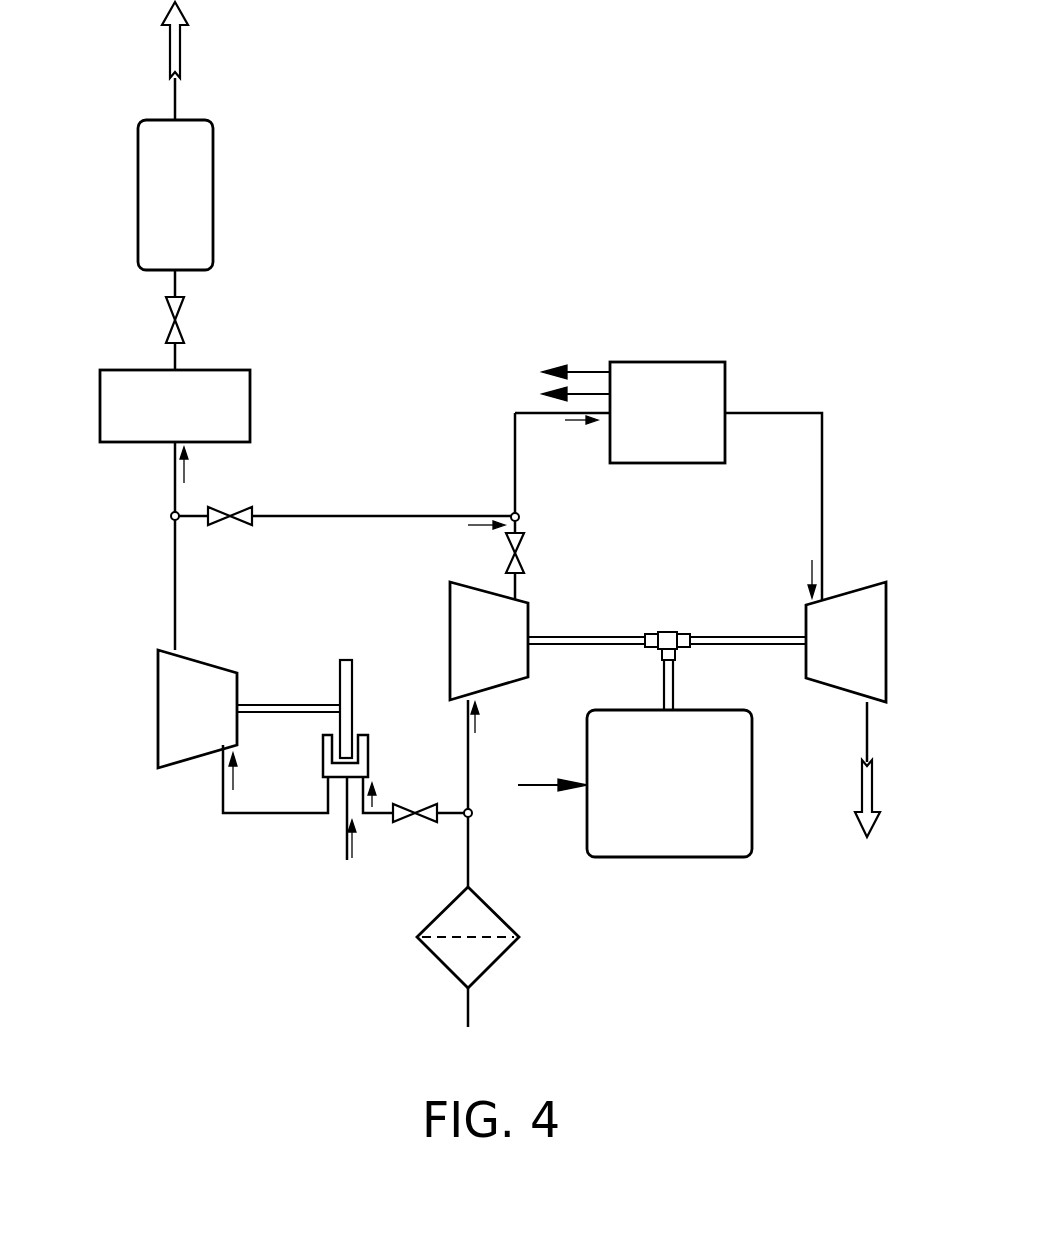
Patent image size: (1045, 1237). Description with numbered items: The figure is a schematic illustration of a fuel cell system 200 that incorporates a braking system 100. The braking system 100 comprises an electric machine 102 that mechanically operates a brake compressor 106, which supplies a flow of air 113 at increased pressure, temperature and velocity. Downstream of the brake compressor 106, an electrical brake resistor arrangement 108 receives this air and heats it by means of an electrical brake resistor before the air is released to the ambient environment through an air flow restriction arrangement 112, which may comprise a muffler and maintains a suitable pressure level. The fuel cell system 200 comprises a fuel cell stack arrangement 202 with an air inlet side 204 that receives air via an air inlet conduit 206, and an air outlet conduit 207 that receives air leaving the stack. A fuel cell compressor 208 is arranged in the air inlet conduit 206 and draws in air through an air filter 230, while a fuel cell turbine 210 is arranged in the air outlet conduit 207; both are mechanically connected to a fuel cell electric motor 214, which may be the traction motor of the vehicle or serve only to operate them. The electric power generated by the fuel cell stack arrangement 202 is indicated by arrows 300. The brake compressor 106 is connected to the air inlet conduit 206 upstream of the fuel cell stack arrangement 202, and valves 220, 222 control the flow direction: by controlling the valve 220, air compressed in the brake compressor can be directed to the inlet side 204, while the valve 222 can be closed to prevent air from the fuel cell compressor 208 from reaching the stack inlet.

The braking system 100 is at (132, 612).
The electric machine 102 is at (322, 755).
The brake compressor 106 is at (158, 708).
The electrical brake resistor arrangement 108 is at (250, 407).
The air flow restriction arrangement 112 is at (213, 197).
The flow of air 113 is at (180, 50).
The fuel cell system 200 is at (708, 240).
The fuel cell stack arrangement 202 is at (670, 362).
The air inlet side 204 is at (608, 418).
The air inlet conduit 206 is at (515, 453).
The air outlet conduit 207 is at (822, 465).
The fuel cell compressor 208 is at (530, 618).
The fuel cell turbine 210 is at (857, 588).
The fuel cell electric motor 214 is at (670, 857).
The valve 220 is at (228, 513).
The valve 222 is at (525, 548).
The air filter 230 is at (442, 963).
The electric power 300 is at (592, 393).